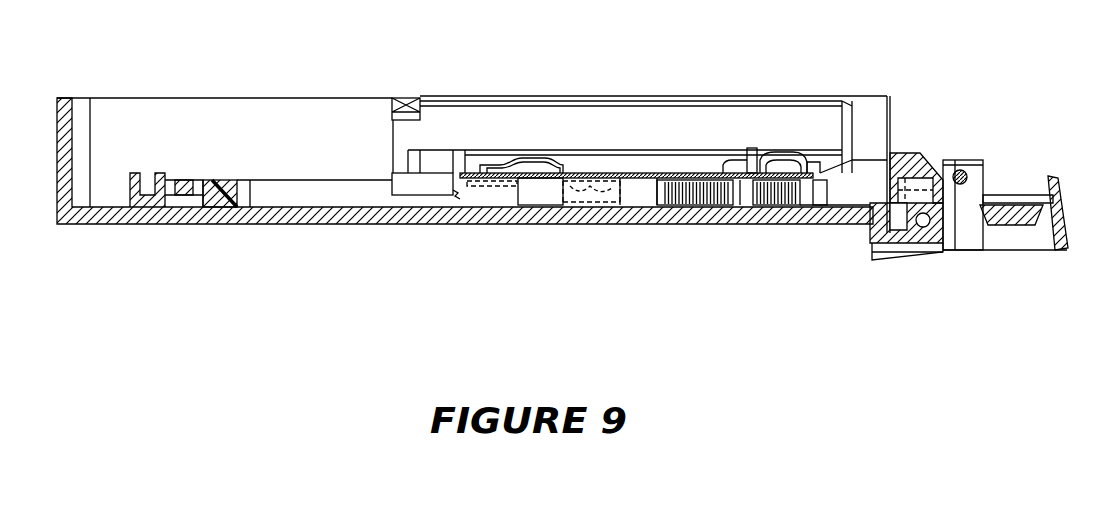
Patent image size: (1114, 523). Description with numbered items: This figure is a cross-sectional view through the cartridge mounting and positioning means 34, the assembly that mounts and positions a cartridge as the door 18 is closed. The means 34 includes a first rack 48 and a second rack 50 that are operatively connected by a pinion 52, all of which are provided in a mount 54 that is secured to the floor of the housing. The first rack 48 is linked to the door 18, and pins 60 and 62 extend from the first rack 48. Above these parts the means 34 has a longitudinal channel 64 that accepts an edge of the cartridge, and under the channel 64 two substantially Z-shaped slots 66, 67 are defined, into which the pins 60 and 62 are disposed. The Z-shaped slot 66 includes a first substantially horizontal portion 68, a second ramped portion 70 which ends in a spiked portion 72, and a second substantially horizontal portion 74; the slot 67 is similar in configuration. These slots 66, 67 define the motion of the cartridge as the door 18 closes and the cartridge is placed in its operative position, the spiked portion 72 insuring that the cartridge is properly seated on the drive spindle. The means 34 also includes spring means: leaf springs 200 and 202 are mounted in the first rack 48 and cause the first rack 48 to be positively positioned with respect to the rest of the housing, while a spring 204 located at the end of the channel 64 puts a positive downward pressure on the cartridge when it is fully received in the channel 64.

The door 18 is at (1050, 176).
The cartridge mounting and positioning means 34 is at (892, 83).
The first rack 48 is at (780, 203).
The second rack 50 is at (328, 178).
The pinion 52 is at (687, 203).
The mount 54 is at (740, 170).
The pin 60 is at (856, 164).
The pin 62 is at (583, 173).
The longitudinal channel 64 is at (488, 120).
The Z-shaped slot 66 is at (812, 183).
The Z-shaped slot 67 is at (532, 183).
The first substantially horizontal portion 68 is at (820, 170).
The second ramped portion 70 is at (812, 160).
The spiked portion 72 is at (781, 156).
The second substantially horizontal portion 74 is at (741, 150).
The leaf spring 200 is at (612, 195).
The leaf spring 202 is at (863, 230).
The spring 204 is at (407, 98).